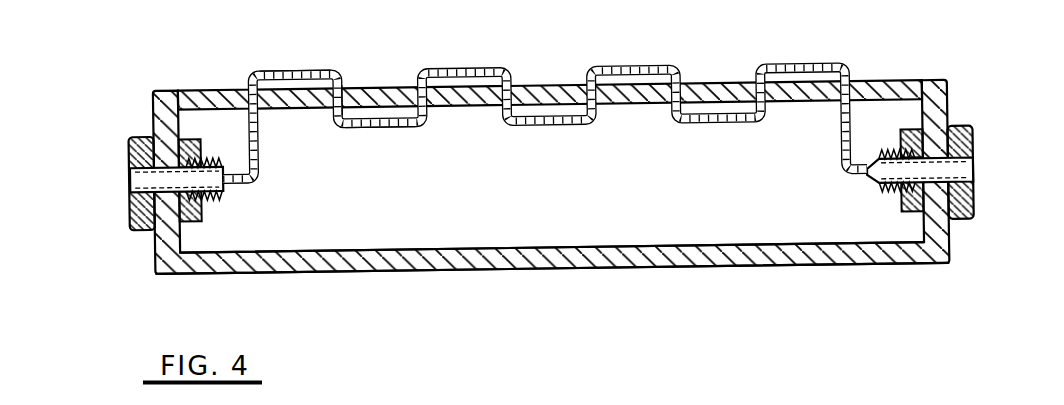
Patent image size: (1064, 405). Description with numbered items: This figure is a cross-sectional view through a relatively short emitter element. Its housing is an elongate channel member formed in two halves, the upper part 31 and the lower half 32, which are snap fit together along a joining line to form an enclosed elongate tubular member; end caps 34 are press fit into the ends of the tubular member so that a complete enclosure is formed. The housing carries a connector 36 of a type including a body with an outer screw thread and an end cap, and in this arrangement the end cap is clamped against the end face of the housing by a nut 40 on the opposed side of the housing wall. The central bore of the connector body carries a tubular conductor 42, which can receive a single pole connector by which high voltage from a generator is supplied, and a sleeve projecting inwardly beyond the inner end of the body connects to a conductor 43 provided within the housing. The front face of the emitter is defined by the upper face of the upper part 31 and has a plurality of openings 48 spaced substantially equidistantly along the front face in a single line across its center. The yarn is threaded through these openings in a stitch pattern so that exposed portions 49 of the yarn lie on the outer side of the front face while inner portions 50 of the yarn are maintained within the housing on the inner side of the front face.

The upper part 31 is at (212, 90).
The lower half 32 is at (350, 273).
The end caps 34 is at (141, 82).
The connector 36 is at (119, 138).
The nut 40 is at (198, 222).
The conductor 42 is at (133, 185).
The conductor 43 is at (270, 150).
The openings 48 is at (348, 77).
The exposed yarn portions 49 is at (300, 60).
The inner yarn portions 50 is at (380, 138).